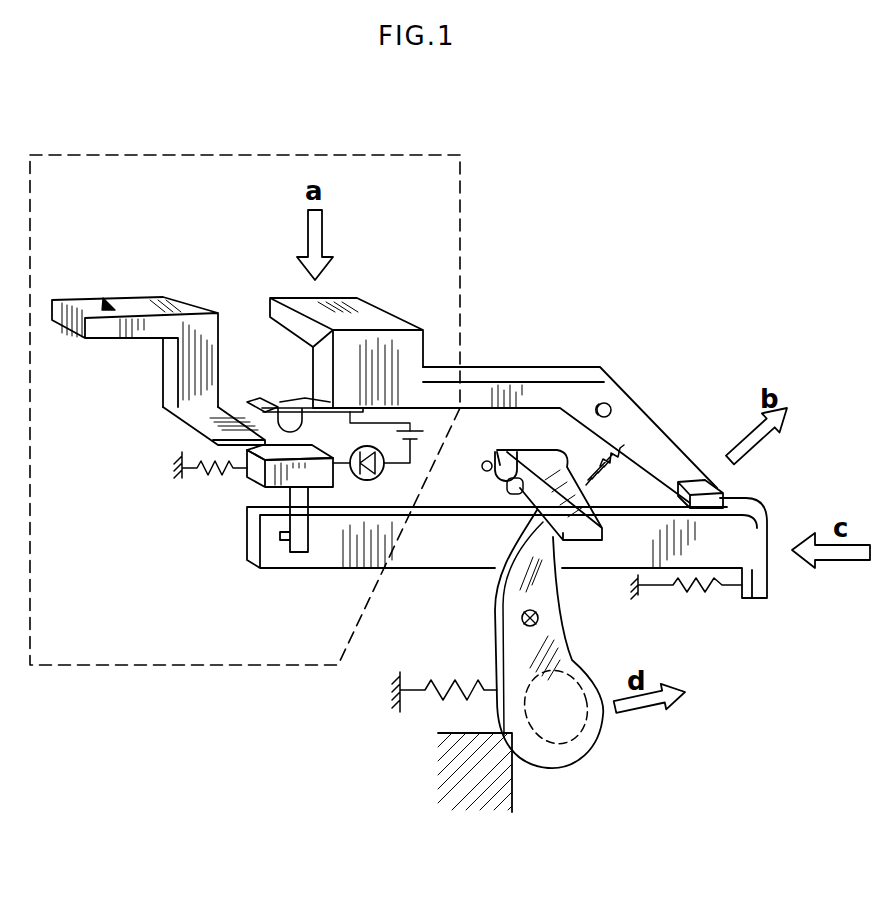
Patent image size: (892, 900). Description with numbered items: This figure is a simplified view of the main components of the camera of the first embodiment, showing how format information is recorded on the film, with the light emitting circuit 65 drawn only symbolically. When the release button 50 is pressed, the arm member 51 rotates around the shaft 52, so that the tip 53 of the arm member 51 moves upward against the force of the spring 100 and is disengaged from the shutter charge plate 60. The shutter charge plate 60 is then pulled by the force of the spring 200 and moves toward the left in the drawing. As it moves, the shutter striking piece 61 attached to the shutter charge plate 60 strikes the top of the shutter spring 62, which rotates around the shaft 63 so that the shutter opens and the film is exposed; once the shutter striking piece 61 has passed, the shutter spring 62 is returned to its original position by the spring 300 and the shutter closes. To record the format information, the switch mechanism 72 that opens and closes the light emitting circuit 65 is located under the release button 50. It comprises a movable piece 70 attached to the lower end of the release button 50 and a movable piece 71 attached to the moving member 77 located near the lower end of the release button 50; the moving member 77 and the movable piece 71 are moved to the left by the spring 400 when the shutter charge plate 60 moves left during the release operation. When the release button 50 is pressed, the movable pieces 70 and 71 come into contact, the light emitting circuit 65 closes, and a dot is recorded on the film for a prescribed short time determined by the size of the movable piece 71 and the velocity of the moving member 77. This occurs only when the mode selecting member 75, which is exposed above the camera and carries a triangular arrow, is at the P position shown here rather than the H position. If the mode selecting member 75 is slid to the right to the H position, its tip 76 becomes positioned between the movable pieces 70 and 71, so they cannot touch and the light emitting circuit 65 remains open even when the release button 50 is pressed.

The release button 50 is at (365, 308).
The arm member 51 is at (540, 362).
The shaft 52 is at (610, 403).
The tip of arm member 53 is at (718, 486).
The shutter charge plate 60 is at (758, 557).
The shutter striking piece 61 is at (590, 537).
The shutter spring 62 is at (573, 662).
The shaft 63 is at (520, 617).
The light emitting circuit 65 is at (410, 445).
The movable piece 70 is at (305, 402).
The movable piece 71 is at (280, 447).
The switch mechanism 72 is at (312, 350).
The mode selecting member 75 is at (178, 303).
The tip of mode selecting member 76 is at (205, 417).
The moving member 77 is at (275, 475).
The spring 100 is at (612, 447).
The spring 200 is at (712, 593).
The spring 300 is at (448, 677).
The spring 400 is at (210, 470).
The P position P is at (100, 297).
The H position H is at (137, 293).